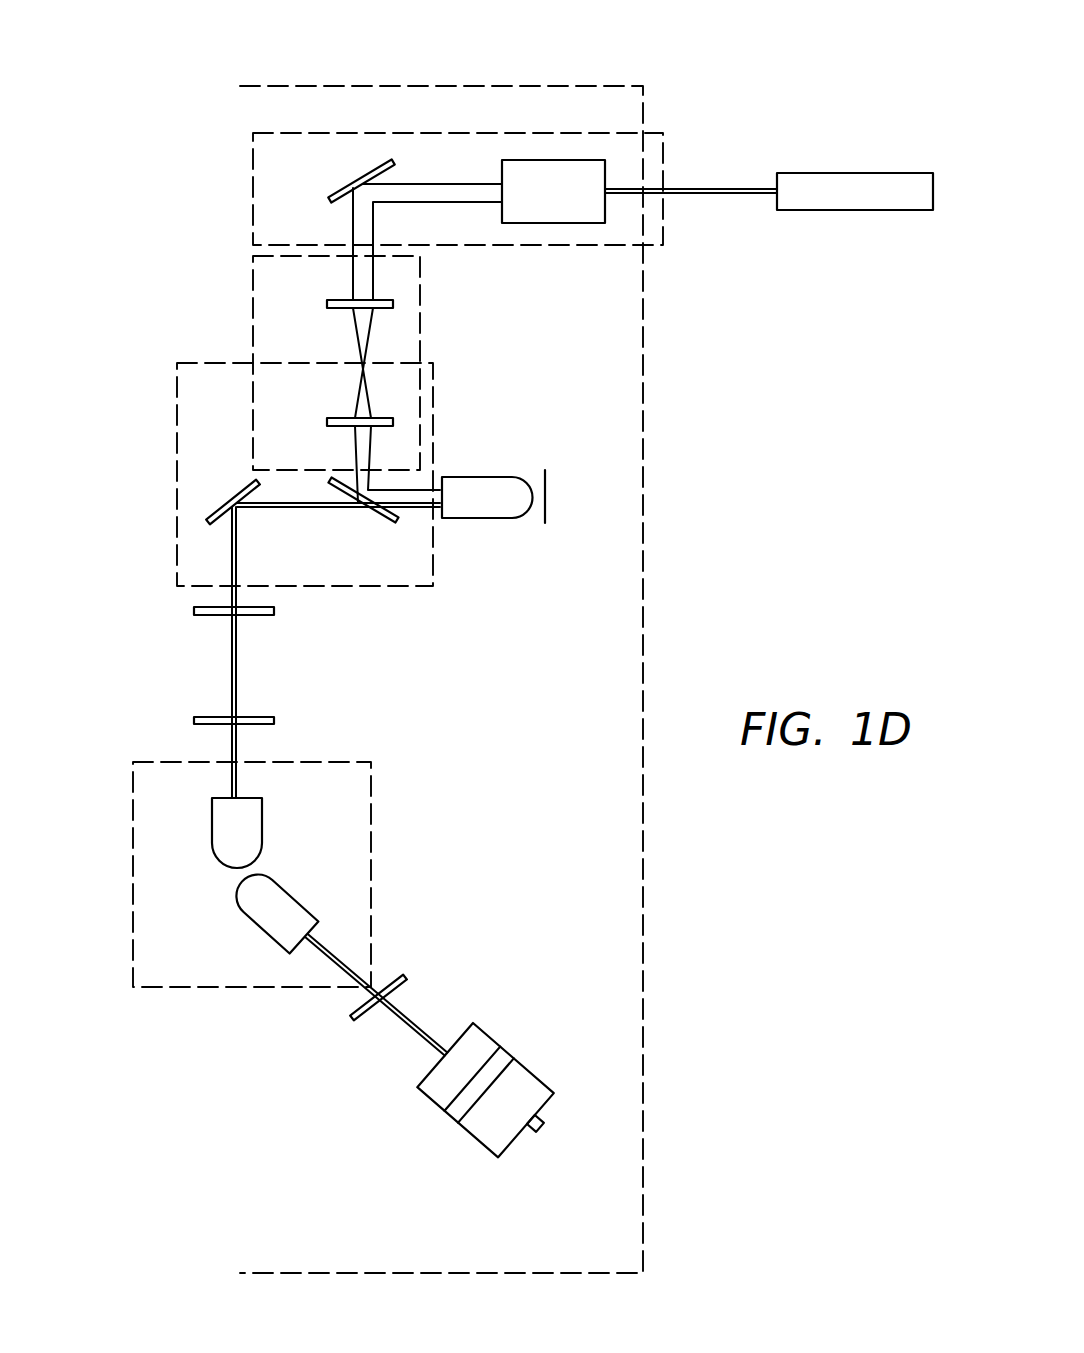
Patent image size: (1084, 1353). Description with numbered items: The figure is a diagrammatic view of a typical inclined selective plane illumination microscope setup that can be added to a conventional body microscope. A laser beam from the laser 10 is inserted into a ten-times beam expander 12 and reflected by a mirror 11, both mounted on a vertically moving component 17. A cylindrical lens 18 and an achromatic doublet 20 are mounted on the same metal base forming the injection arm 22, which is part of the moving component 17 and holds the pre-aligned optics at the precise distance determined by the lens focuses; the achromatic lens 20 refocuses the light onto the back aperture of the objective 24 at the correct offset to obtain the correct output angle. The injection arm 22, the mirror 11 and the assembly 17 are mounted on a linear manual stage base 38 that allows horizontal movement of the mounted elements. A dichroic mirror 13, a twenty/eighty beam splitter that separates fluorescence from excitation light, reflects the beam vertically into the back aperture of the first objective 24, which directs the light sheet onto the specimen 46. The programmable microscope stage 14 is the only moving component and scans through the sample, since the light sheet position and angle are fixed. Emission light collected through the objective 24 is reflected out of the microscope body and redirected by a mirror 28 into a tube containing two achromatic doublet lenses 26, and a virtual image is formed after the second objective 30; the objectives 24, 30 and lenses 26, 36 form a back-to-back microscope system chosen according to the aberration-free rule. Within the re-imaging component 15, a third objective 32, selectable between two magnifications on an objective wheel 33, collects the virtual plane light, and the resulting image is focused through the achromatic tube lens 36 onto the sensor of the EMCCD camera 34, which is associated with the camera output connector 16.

The laser 10 is at (838, 195).
The mirror 11 is at (337, 188).
The beam expander 12 is at (590, 205).
The dichroic mirror 13 is at (382, 515).
The microscope stage 14 is at (434, 596).
The re-imaging component 15 is at (384, 832).
The camera output connector 16 is at (574, 1041).
The vertically moving component 17 is at (273, 210).
The cylindrical lens 18 is at (315, 308).
The achromatic doublet 20 is at (395, 410).
The injection arm 22 is at (435, 305).
The objective 24 is at (507, 503).
The achromatic doublet lenses 26 is at (262, 616).
The mirror 28 is at (213, 513).
The second objective 30 is at (225, 820).
The objective 32 is at (278, 928).
The objective wheel 33 is at (157, 947).
The camera 34 is at (517, 1060).
The tube lens 36 is at (407, 982).
The stage base 38 is at (283, 99).
The specimen 46 is at (550, 500).